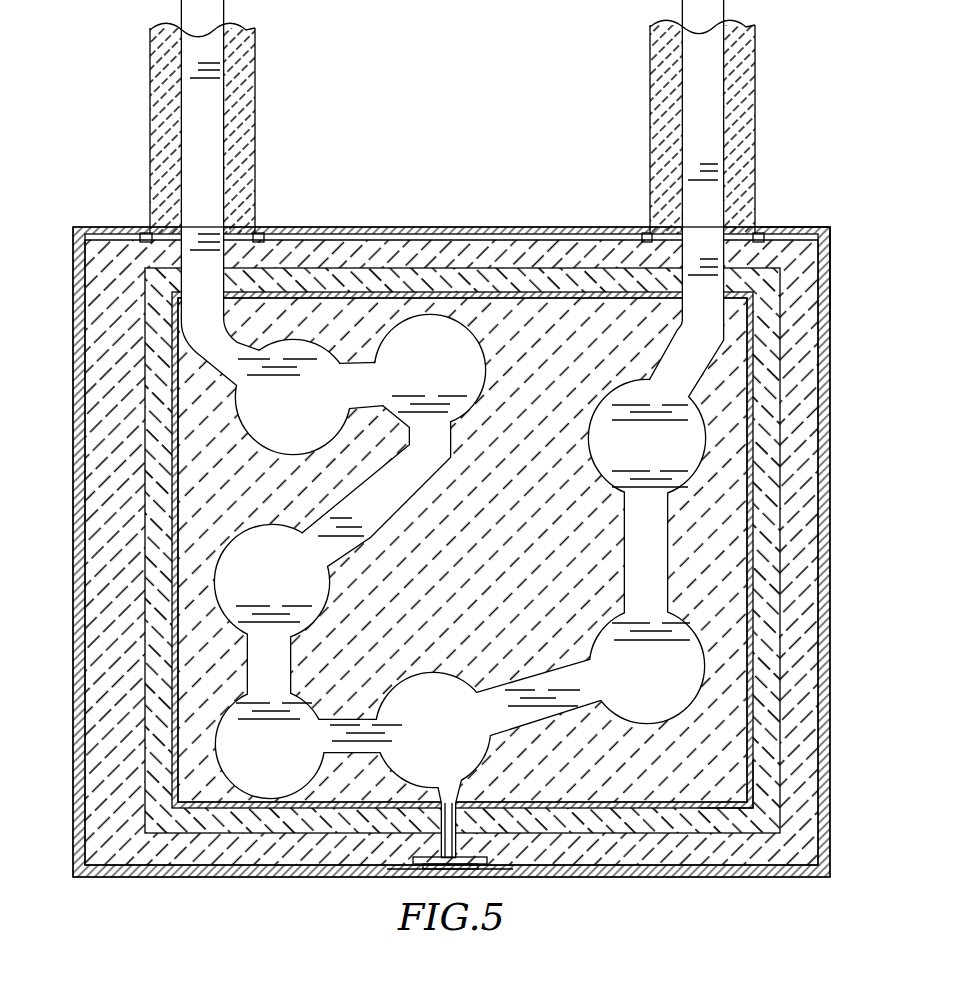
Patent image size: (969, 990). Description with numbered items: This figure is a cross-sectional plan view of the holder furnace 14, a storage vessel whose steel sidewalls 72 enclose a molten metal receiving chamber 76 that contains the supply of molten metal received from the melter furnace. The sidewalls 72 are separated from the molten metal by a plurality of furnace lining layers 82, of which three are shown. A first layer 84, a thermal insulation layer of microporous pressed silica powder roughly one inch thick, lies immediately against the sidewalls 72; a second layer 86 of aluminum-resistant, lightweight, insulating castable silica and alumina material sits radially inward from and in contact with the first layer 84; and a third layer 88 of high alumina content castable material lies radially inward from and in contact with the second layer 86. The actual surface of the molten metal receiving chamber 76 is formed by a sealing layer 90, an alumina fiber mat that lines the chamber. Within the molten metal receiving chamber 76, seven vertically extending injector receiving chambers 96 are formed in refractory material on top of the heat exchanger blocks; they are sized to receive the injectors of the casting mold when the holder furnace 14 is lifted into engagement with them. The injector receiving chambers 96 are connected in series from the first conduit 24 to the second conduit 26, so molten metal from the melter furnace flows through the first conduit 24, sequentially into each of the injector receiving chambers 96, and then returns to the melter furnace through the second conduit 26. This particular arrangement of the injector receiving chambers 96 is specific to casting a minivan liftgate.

The holder furnace 14 is at (370, 82).
The first conduit 24 is at (232, 140).
The second conduit 26 is at (680, 143).
The sidewalls 72 is at (572, 228).
The molten metal receiving chamber 76 is at (737, 560).
The furnace lining layers 82 is at (755, 788).
The first layer 84 is at (824, 278).
The second layer 86 is at (797, 395).
The third layer 88 is at (766, 360).
The sealing layer 90 is at (167, 549).
The injector receiving chambers 96 is at (270, 413).